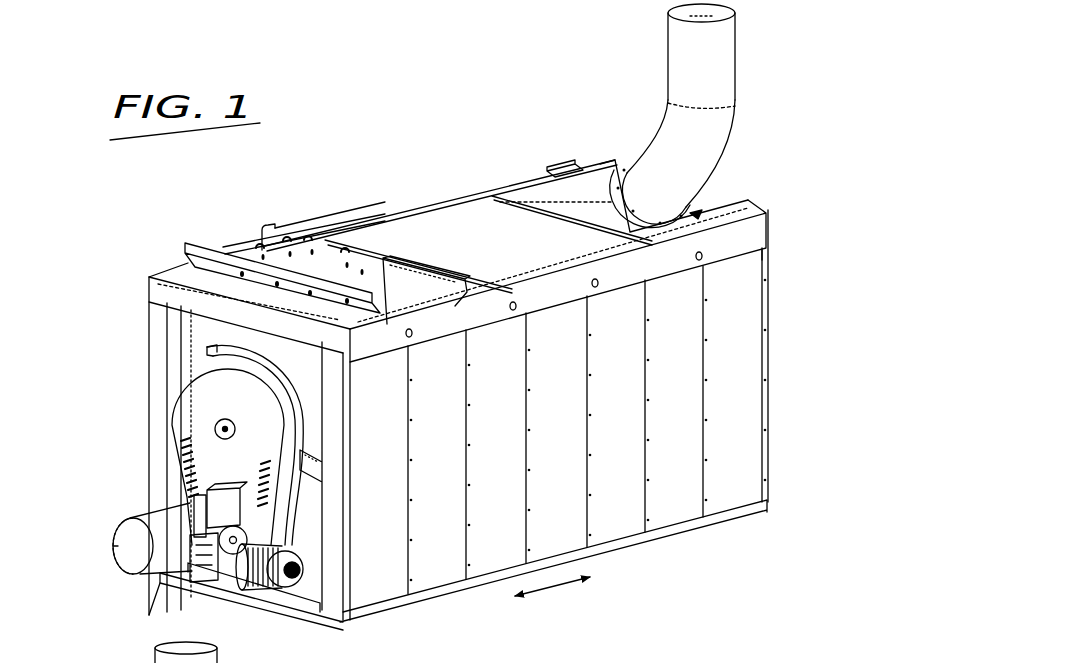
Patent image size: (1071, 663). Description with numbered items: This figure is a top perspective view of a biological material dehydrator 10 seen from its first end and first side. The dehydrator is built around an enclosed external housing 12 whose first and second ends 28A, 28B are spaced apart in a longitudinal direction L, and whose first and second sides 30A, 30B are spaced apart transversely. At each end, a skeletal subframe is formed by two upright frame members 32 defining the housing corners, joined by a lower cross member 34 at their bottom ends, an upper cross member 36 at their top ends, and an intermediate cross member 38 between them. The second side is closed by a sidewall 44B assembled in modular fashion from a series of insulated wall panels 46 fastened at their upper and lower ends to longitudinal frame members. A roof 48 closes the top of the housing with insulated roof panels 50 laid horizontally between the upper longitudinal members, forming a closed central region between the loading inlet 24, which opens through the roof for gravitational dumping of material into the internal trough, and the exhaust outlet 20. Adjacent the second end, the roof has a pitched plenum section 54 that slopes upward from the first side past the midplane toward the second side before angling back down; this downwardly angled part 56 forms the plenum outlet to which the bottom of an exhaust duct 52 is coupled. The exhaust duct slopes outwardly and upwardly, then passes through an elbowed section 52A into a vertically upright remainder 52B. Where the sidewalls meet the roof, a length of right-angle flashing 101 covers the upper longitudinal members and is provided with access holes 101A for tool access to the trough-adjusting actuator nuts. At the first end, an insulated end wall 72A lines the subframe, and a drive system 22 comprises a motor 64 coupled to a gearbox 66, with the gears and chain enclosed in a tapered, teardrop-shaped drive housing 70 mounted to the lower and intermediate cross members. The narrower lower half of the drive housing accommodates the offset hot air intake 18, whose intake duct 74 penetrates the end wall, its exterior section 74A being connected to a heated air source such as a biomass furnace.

The biological material dehydrator 10 is at (92, 232).
The external housing 12 is at (405, 198).
The hot air intake 18 is at (108, 558).
The exhaust outlet 20 is at (748, 90).
The drive system 22 is at (190, 432).
The loading inlet 24 is at (320, 257).
The first end 28A is at (122, 358).
The second end 28B is at (810, 252).
The first side 30A is at (305, 205).
The second side 30B is at (612, 573).
The upright frame member 32 is at (157, 428).
The lower cross member 34 is at (283, 618).
The upper cross member 36 is at (165, 296).
The intermediate cross member 38 is at (315, 488).
The sidewall 44B is at (740, 440).
The insulated wall panels 46 is at (552, 537).
The roof 48 is at (470, 215).
The insulated roof panels 50 is at (415, 232).
The exhaust duct 52 is at (706, 146).
The elbowed section 52A is at (717, 160).
The vertically upright remainder 52B is at (688, 48).
The pitched plenum section 54 is at (565, 193).
The downwardly angled part 56 is at (693, 213).
The motor 64 is at (268, 585).
The gearbox 66 is at (180, 577).
The drive housing 70 is at (212, 426).
The insulated end wall 72A is at (303, 377).
The intake duct 74 is at (156, 530).
The exterior section 74A is at (128, 566).
The right-angle flashing 101 is at (758, 240).
The access holes 101A is at (703, 257).
The longitudinal direction L is at (552, 596).